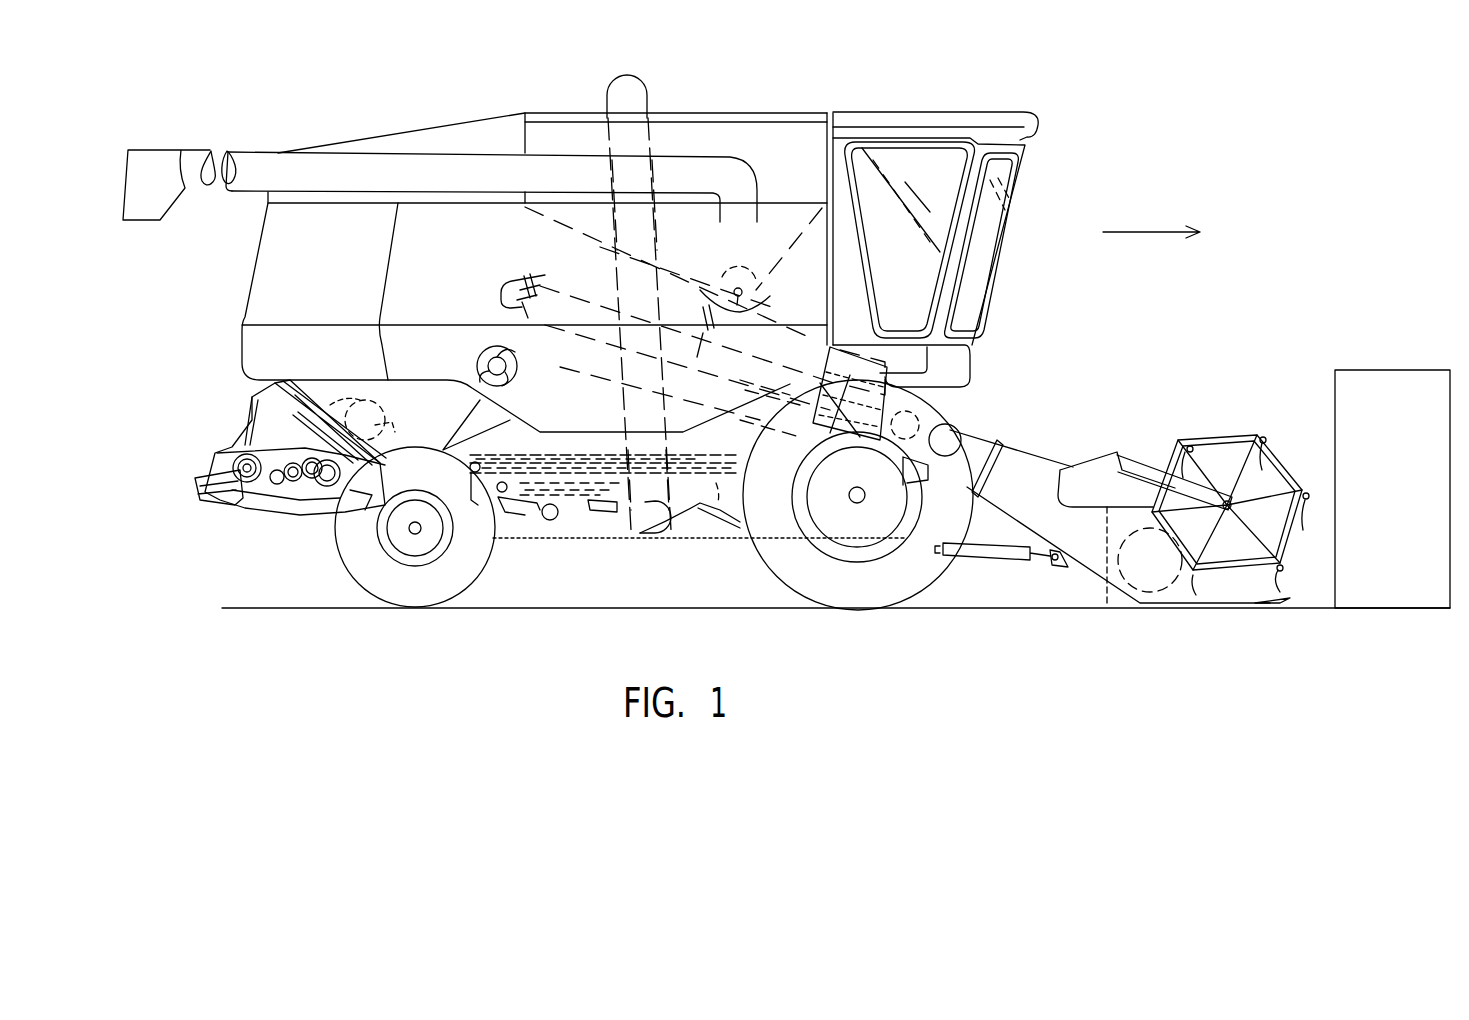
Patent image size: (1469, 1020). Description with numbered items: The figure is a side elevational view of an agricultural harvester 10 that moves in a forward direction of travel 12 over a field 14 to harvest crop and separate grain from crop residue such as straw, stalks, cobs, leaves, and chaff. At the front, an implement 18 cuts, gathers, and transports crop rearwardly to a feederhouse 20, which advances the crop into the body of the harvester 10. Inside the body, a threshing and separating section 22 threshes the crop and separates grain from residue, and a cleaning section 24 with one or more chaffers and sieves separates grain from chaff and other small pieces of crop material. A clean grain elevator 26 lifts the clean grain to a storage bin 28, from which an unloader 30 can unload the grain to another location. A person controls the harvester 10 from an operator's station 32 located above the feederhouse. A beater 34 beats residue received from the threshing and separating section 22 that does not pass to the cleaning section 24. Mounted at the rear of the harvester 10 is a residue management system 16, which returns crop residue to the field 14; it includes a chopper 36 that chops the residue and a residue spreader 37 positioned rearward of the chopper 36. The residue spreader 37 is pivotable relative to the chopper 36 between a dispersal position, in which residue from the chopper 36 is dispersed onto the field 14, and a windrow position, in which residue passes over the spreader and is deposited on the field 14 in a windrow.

The agricultural harvester 10 is at (1282, 127).
The forward direction of travel 12 is at (1160, 232).
The field 14 is at (1320, 603).
The residue management system 16 is at (213, 403).
The implement 18 is at (1192, 592).
The feederhouse 20 is at (1028, 453).
The threshing and separating section 22 is at (577, 270).
The cleaning section 24 is at (547, 428).
The clean grain elevator 26 is at (656, 262).
The storage bin 28 is at (784, 262).
The unloader 30 is at (428, 157).
The operator's station 32 is at (945, 113).
The beater 34 is at (487, 347).
The chopper 36 is at (387, 397).
The residue spreader 37 is at (238, 522).